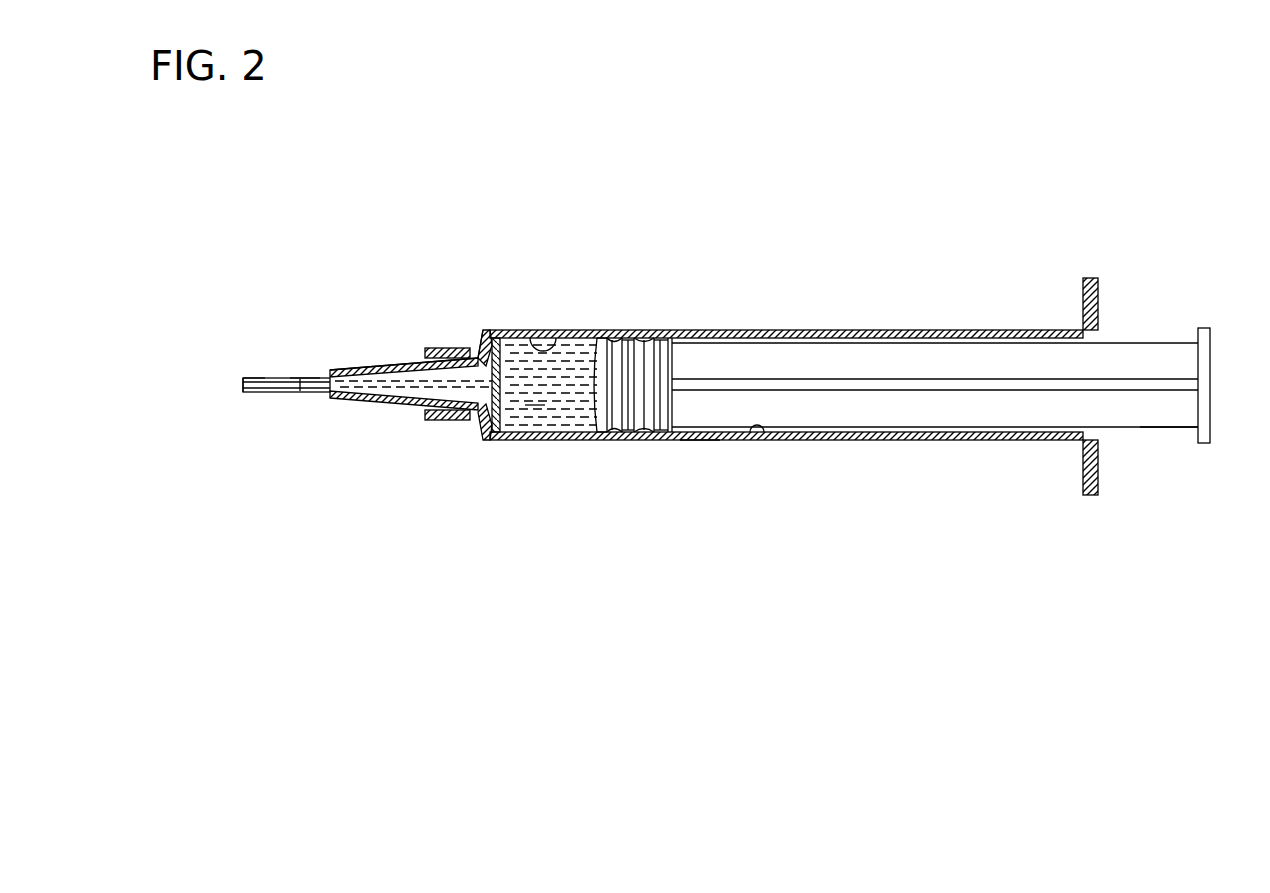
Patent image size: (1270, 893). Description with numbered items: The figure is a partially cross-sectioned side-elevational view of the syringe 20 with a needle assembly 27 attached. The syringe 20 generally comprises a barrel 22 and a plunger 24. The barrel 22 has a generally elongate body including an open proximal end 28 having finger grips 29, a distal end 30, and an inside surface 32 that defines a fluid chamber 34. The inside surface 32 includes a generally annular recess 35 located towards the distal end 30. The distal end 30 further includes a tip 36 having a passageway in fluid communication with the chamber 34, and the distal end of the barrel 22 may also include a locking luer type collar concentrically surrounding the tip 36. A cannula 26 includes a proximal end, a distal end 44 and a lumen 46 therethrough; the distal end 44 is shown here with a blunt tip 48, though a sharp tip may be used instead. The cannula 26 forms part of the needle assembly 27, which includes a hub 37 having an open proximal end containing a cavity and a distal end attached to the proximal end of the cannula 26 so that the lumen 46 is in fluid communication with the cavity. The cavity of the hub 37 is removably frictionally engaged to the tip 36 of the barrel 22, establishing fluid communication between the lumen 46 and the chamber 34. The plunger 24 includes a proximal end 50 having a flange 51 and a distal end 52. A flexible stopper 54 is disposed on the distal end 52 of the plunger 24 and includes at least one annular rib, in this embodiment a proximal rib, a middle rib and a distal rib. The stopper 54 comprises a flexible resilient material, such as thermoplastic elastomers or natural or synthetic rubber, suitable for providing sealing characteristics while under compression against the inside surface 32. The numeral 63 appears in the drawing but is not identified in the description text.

The syringe 20 is at (930, 450).
The barrel 22 is at (752, 330).
The plunger 24 is at (842, 342).
The cannula 26 is at (278, 393).
The needle assembly 27 is at (352, 358).
The open proximal end 28 is at (1055, 329).
The finger grips 29 is at (1097, 277).
The distal end 30 is at (500, 441).
The inside surface 32 is at (527, 338).
The fluid chamber 34 is at (568, 392).
The annular recess 35 is at (505, 331).
The tip 36 is at (413, 420).
The hub 37 is at (380, 400).
The distal end 44 is at (262, 377).
The lumen 46 is at (303, 377).
The blunt tip 48 is at (243, 376).
The proximal end 50 is at (1166, 428).
The flange 51 is at (1203, 327).
The distal end 52 is at (695, 441).
The flexible stopper 54 is at (613, 412).
The liquid 63 is at (535, 405).